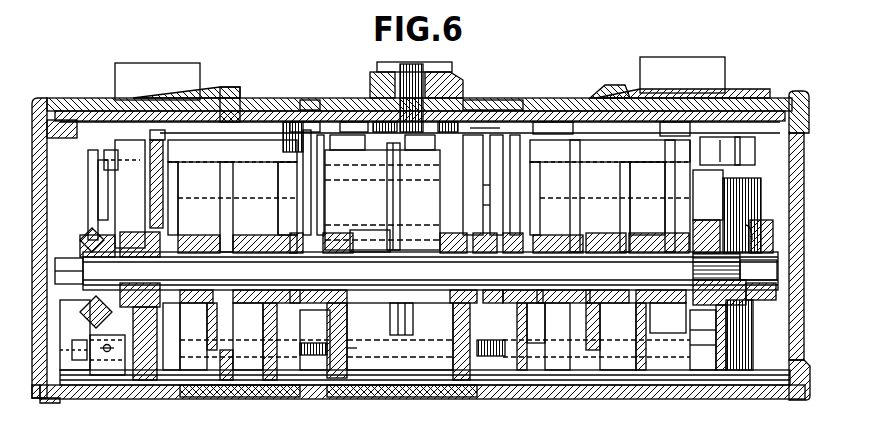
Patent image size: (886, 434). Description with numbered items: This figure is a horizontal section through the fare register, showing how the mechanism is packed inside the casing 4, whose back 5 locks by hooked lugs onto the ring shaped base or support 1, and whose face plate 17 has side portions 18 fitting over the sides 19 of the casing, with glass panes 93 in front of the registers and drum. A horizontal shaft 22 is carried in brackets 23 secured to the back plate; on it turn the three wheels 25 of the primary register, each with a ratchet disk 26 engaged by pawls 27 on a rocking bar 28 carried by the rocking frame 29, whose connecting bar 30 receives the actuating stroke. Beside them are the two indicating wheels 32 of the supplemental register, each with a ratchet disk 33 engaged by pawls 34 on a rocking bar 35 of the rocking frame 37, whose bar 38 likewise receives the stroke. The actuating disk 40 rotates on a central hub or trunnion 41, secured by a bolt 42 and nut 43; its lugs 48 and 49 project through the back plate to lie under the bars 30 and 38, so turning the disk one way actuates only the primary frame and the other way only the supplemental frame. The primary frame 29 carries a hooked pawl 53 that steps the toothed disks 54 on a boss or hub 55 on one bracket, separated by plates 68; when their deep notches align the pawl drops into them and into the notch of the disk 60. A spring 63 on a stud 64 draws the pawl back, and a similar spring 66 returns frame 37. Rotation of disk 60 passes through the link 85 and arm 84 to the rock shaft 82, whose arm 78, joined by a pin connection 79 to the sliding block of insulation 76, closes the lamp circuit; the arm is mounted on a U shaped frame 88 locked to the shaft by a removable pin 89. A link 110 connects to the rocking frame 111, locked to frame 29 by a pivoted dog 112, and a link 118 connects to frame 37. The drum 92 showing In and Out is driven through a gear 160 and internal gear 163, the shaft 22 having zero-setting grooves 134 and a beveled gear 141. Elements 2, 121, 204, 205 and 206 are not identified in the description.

The ring shaped base or support 1 is at (62, 100).
The mounting lug 2 is at (420, 78).
The casing 4 is at (47, 172).
The back plate 5 is at (314, 106).
The face plate 17 is at (715, 397).
The side portions 18 is at (75, 338).
The sides of the casing 19 is at (70, 321).
The horizontal shaft 22 is at (372, 288).
The brackets 23 is at (383, 326).
The wheels of the main or primary register 25 is at (522, 220).
The ratchet teeth or ratchet disks 26 is at (517, 376).
The pawls 27 is at (633, 190).
The rocking bar 28 is at (540, 122).
The rocking frame of the primary register 29 is at (610, 196).
The connecting bar or shaft 30 is at (672, 128).
The indicating wheels of the supplemental register 32 is at (237, 207).
The ratchet disk 33 is at (232, 383).
The pawls 34 is at (225, 192).
The rocking bar 35 is at (190, 152).
The rocking frame of the supplemental register 37 is at (160, 204).
The connecting shaft or bar 38 is at (259, 135).
The actuating wheel or disk 40 is at (493, 91).
The central hub or trunnion 41 is at (456, 78).
The bolt 42 is at (415, 87).
The nut 43 is at (383, 72).
The lug or projection 48 is at (593, 100).
The lug 49 is at (243, 100).
The hooked pawl or dog 53 is at (742, 162).
The toothed disks 54 is at (745, 187).
The boss or hub 55 is at (735, 267).
The disk 60 is at (748, 208).
The spring 63 is at (500, 356).
The stud 64 is at (480, 342).
The spring 66 is at (310, 356).
The plates 68 is at (748, 340).
The sliding block of insulation 76 is at (160, 137).
The arm 78 is at (90, 208).
The pin connection 79 is at (113, 154).
The rock shaft 82 is at (152, 335).
The arm 84 is at (720, 360).
The link 85 is at (708, 211).
The U shaped frame 88 is at (107, 376).
The removable pin 89 is at (105, 352).
The drum 92 is at (382, 192).
The glass panes 93 is at (210, 391).
The link 110 is at (470, 196).
The rocking frame 111 is at (478, 213).
The pivoted dog 112 is at (463, 230).
The link 118 is at (306, 160).
The post 121 is at (413, 315).
The long slots or grooves 134 is at (416, 270).
The beveled gear 141 is at (85, 247).
The gear 160 is at (352, 240).
The internal gear 163 is at (369, 347).
The passage 204 is at (348, 100).
The passage 205 is at (300, 96).
The passage 206 is at (488, 128).